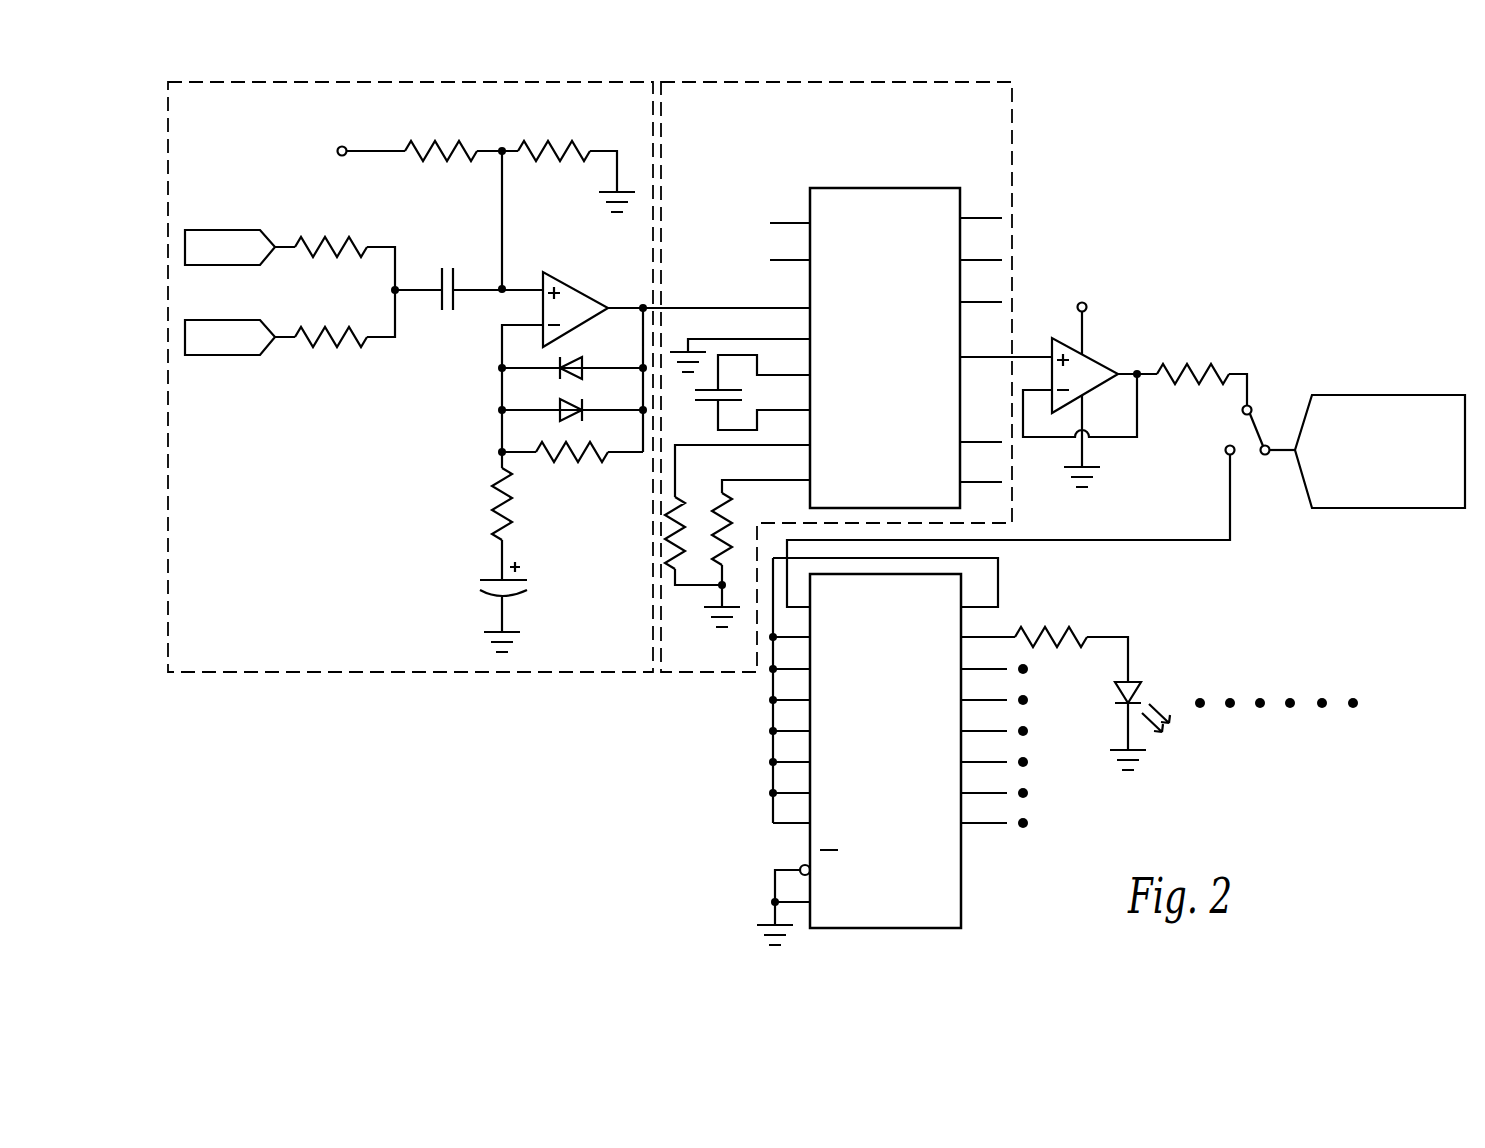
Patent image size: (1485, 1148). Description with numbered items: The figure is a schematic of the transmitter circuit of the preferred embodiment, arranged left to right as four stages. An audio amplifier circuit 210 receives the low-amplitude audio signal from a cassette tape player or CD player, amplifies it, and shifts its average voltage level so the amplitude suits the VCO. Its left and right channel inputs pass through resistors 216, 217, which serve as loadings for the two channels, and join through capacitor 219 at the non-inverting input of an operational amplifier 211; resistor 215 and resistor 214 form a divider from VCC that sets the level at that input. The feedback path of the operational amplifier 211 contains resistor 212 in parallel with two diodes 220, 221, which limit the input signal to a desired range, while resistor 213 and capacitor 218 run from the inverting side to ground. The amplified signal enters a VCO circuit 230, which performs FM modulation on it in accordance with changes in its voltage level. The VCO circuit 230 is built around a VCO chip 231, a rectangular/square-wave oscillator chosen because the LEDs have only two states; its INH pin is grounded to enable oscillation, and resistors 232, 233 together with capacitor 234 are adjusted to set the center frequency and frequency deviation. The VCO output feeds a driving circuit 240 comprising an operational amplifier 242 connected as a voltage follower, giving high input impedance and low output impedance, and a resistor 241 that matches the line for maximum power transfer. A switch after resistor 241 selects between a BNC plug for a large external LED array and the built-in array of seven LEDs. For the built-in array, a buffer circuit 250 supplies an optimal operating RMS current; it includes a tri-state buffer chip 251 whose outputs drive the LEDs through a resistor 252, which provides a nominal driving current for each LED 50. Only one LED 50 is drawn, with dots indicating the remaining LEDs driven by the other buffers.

The audio amplifier circuit 210 is at (410, 403).
The operational amplifier 211 is at (583, 292).
The resistor R4 212 is at (576, 448).
The resistor R5 213 is at (496, 514).
The resistor R6 214 is at (578, 142).
The resistor R7 215 is at (459, 140).
The resistor R8 216 is at (317, 238).
The resistor R9 217 is at (338, 350).
The capacitor C2 218 is at (492, 578).
The capacitor C3 219 is at (444, 315).
The diode 220 is at (573, 360).
The diode 221 is at (571, 399).
The VCO circuit 230 is at (812, 403).
The VCO chip 231 is at (878, 203).
The resistor 232 is at (668, 525).
The resistor 233 is at (716, 544).
The capacitor 234 is at (712, 401).
The driving circuit 240 is at (1126, 435).
The resistor 241 is at (1198, 368).
The operational amplifier 242 is at (1093, 355).
The buffer circuit 250 is at (1031, 761).
The tri-state buffer chip 251 is at (962, 860).
The resistor 252 is at (1065, 625).
The LED 50 is at (1138, 668).